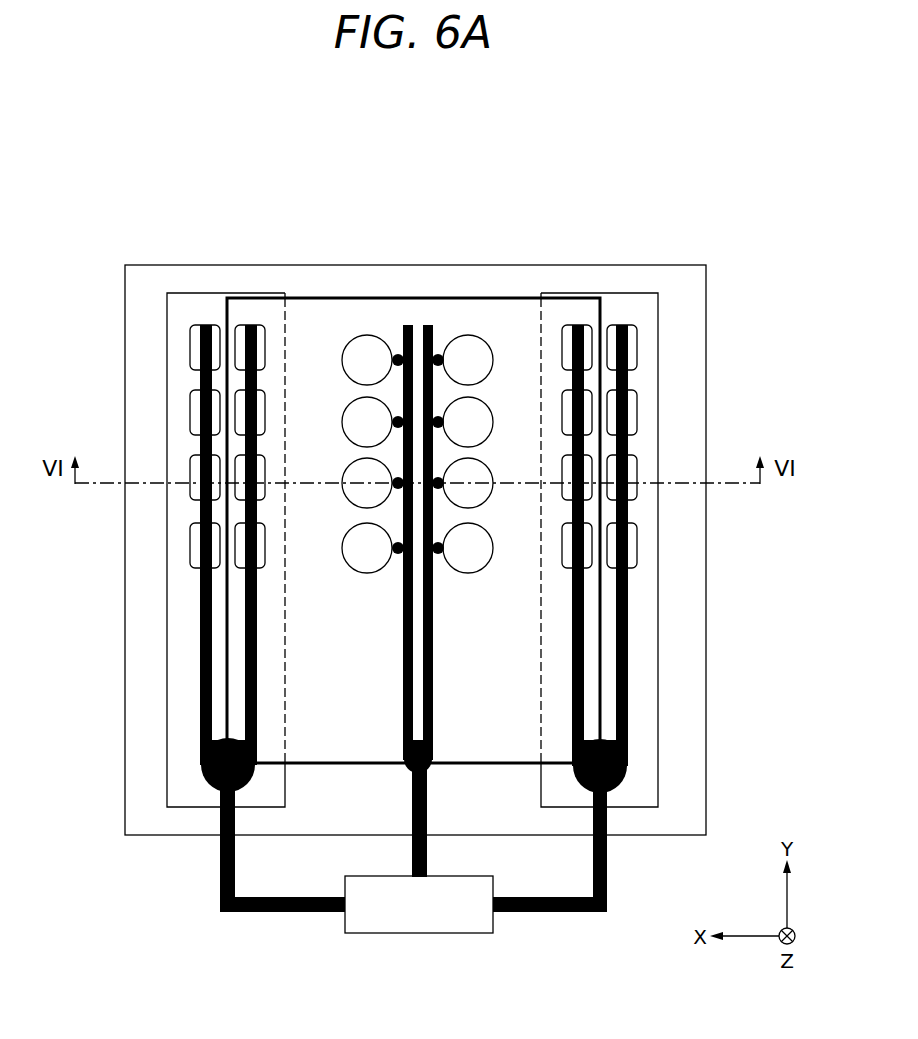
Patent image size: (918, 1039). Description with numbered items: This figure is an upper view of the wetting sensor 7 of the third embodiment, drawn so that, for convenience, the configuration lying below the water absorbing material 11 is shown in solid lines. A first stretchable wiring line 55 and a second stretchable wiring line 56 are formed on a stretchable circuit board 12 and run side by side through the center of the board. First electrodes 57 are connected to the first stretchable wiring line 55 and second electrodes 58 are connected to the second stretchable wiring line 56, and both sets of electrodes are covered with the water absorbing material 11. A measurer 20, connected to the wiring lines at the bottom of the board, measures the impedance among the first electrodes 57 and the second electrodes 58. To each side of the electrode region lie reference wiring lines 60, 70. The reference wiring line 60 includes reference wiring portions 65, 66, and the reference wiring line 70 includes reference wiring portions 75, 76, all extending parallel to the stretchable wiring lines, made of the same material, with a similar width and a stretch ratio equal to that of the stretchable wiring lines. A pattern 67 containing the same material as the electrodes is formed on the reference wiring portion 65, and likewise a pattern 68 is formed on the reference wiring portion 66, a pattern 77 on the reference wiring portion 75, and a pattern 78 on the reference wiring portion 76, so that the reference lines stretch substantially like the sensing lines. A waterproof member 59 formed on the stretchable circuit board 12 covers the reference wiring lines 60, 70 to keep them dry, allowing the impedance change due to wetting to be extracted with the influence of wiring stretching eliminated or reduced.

The wetting sensor 7 is at (398, 87).
The water absorbing material 11 is at (525, 318).
The stretchable circuit board 12 is at (693, 316).
The measurer 20 is at (418, 935).
The first stretchable wiring line 55 is at (408, 323).
The second stretchable wiring line 56 is at (428, 323).
The first electrodes 57 is at (367, 335).
The second electrodes 58 is at (468, 335).
The waterproof member 59 is at (660, 350).
The reference wiring line 60 is at (265, 183).
The reference wiring portion 65 is at (206, 708).
The reference wiring portion 66 is at (250, 635).
The pattern 67 is at (205, 323).
The pattern 68 is at (250, 323).
The reference wiring line 70 is at (558, 183).
The reference wiring portion 75 is at (578, 690).
The reference wiring portion 76 is at (622, 650).
The pattern 77 is at (577, 323).
The pattern 78 is at (622, 323).